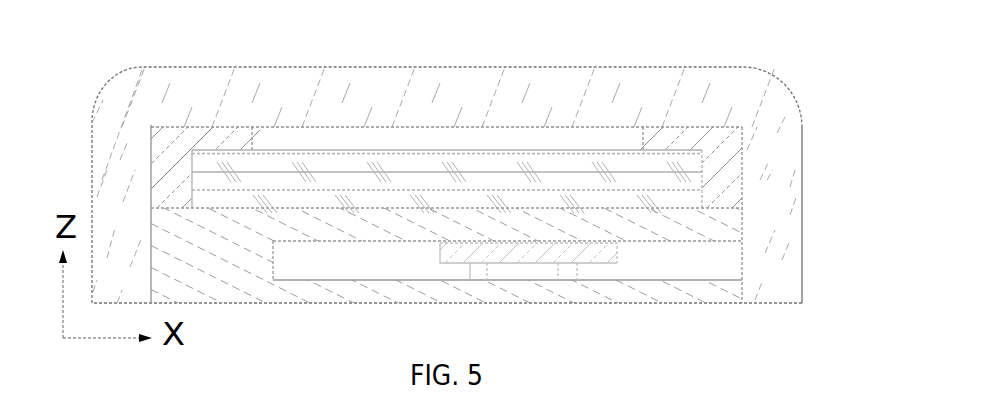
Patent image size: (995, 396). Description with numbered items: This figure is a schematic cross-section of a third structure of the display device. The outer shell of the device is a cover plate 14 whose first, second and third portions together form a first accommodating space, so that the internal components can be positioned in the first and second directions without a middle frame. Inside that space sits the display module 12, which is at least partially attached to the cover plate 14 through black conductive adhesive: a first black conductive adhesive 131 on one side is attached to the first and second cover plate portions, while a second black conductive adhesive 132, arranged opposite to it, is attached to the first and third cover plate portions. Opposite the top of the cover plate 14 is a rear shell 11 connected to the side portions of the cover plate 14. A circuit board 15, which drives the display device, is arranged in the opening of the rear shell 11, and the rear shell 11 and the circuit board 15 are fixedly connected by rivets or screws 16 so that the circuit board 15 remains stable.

The rear shell 11 is at (713, 295).
The display module 12 is at (673, 195).
The first black conductive adhesive 131 is at (167, 153).
The second black conductive adhesive 132 is at (743, 142).
The cover plate 14 is at (772, 80).
The circuit board 15 is at (573, 253).
The rivets or screws 16 is at (567, 273).